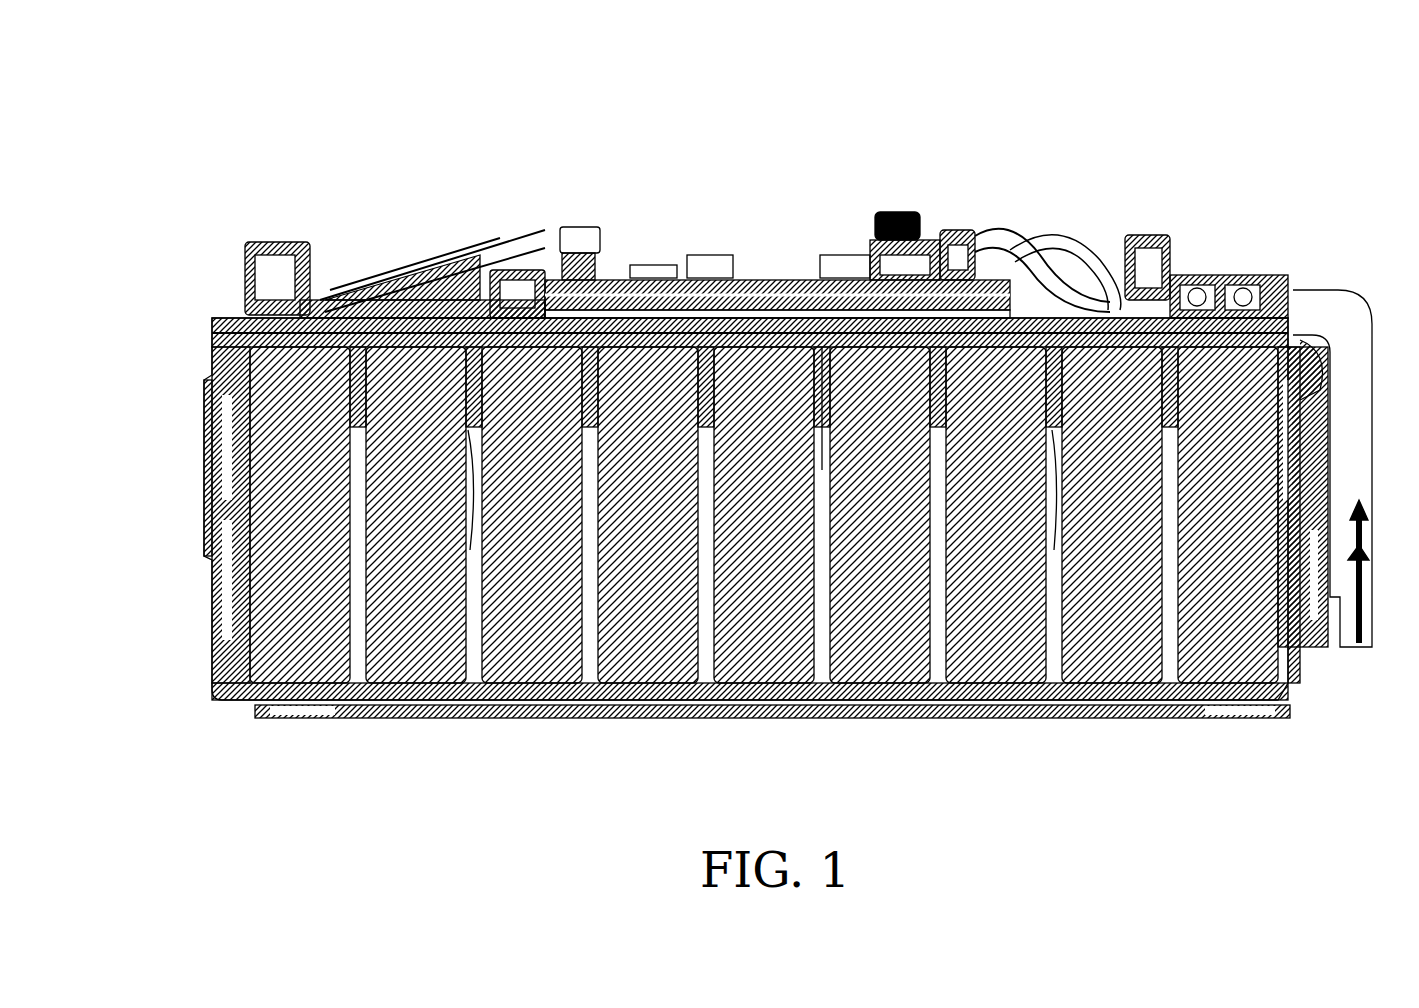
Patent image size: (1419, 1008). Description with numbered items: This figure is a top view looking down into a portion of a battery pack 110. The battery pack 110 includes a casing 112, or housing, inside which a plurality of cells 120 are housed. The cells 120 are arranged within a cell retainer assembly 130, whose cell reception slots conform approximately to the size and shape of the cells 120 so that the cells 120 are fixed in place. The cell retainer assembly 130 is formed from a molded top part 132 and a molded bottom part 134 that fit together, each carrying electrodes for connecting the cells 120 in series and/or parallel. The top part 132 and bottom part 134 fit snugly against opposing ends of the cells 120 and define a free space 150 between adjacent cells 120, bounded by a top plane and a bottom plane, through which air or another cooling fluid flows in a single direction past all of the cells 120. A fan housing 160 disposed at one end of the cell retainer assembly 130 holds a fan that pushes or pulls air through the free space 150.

The battery pack 110 is at (295, 138).
The casing 112 is at (237, 683).
The battery cells 120 is at (1095, 415).
The cell retainer assembly 130 is at (325, 348).
The top part 132 is at (708, 350).
The bottom part 134 is at (945, 683).
The free space 150 is at (822, 455).
The fan housing 160 is at (470, 565).